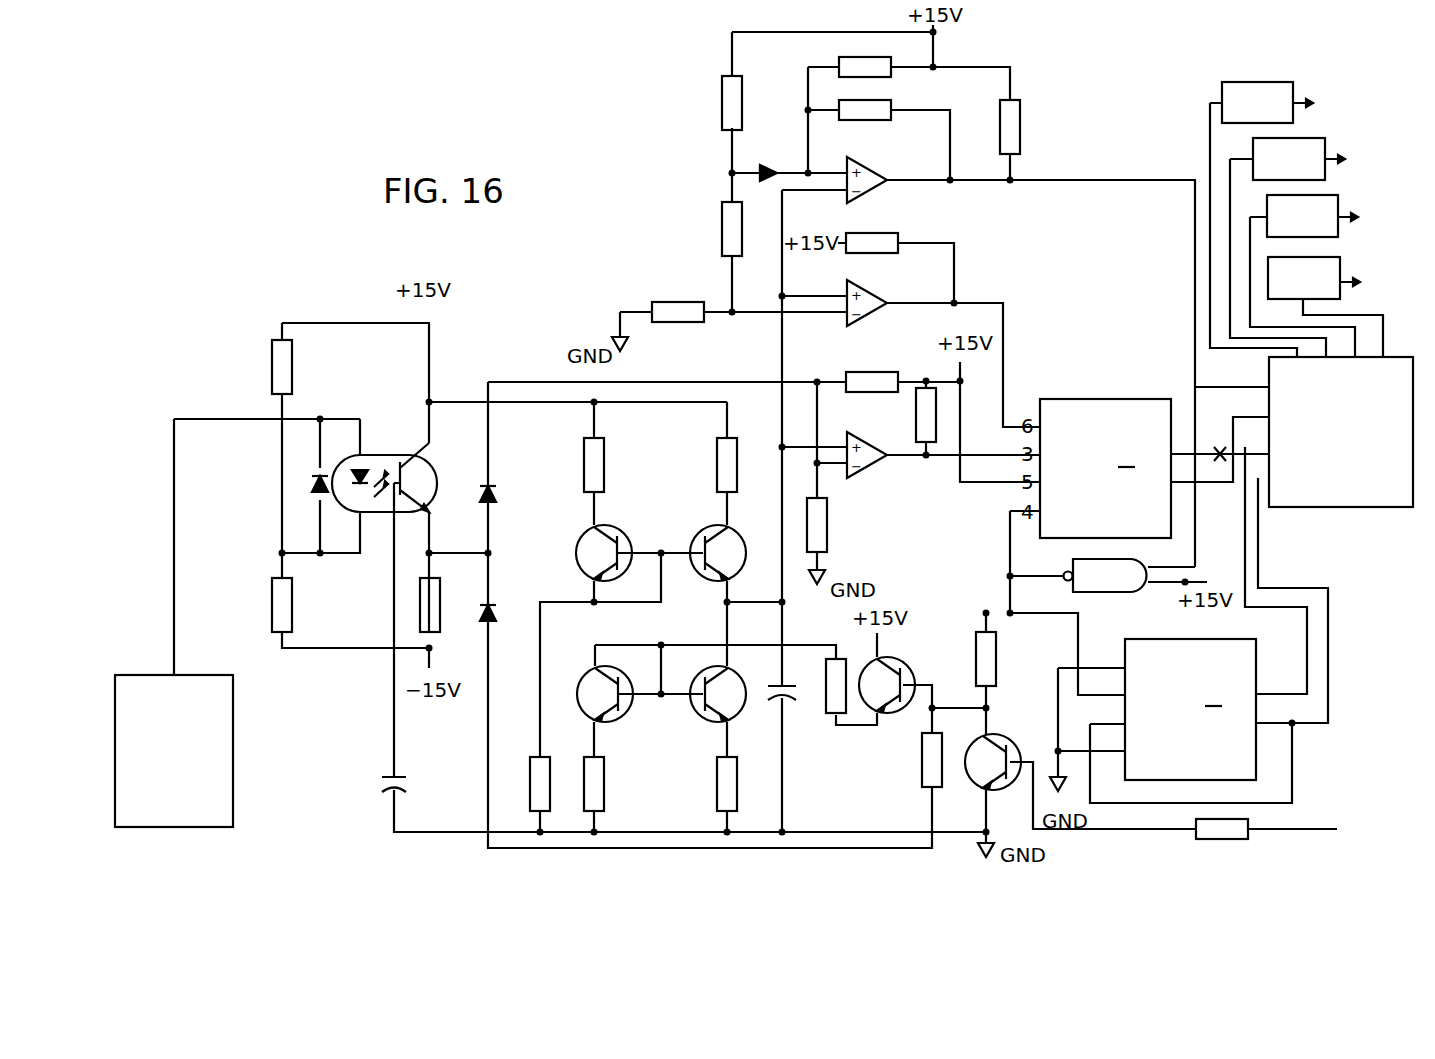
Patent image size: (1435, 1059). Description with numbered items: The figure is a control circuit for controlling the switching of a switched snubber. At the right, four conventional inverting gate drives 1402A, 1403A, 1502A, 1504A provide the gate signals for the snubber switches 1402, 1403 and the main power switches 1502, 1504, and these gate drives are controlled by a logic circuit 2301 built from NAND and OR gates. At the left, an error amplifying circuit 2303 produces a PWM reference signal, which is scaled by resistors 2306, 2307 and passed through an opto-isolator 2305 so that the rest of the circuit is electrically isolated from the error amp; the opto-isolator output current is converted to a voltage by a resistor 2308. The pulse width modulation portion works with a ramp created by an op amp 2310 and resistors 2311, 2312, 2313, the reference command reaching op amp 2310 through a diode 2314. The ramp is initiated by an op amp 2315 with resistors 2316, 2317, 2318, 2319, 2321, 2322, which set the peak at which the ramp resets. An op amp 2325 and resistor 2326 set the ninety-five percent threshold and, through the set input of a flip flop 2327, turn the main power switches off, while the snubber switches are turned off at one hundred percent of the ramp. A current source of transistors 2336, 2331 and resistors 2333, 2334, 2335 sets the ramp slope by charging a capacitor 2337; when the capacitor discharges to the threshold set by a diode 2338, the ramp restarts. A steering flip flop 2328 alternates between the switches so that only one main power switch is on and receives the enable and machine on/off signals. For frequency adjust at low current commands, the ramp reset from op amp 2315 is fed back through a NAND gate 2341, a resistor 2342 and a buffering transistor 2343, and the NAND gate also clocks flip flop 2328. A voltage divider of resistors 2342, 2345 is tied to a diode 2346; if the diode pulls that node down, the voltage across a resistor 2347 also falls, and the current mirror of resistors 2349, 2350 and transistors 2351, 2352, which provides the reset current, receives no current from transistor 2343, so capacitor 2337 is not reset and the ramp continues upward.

The logic circuit 2301 is at (1364, 443).
The error amplifying circuit 2303 is at (198, 765).
The opto-isolator 2305 is at (378, 455).
The resistor 2306 is at (294, 368).
The resistor 2307 is at (292, 608).
The resistor 2308 is at (420, 612).
The op amp 2310 is at (870, 470).
The resistor 2311 is at (828, 530).
The resistor 2312 is at (918, 412).
The resistor 2313 is at (867, 372).
The diode 2314 is at (492, 488).
The op amp 2315 is at (863, 182).
The resistor 2316 is at (682, 303).
The resistor 2317 is at (722, 230).
The resistor 2318 is at (722, 105).
The resistor 2319 is at (862, 58).
The resistor 2321 is at (860, 120).
The resistor 2322 is at (1022, 125).
The op amp 2325 is at (875, 297).
The resistor 2326 is at (880, 235).
The flip flop 2327 is at (1105, 400).
The flip flop 2328 is at (1258, 760).
The transistor 2331 is at (743, 572).
The resistor 2333 is at (530, 783).
The resistor 2334 is at (605, 460).
The resistor 2335 is at (742, 457).
The transistor 2336 is at (622, 535).
The capacitor 2337 is at (797, 690).
The diode 2338 is at (388, 785).
The NAND gate 2341 is at (1105, 575).
The resistor 2342 is at (998, 662).
The buffering transistor 2343 is at (892, 660).
The resistor 2345 is at (921, 757).
The diode 2346 is at (492, 607).
The resistor 2347 is at (827, 670).
The resistor 2349 is at (606, 785).
The resistor 2350 is at (717, 792).
The transistor 2351 is at (585, 680).
The transistor 2352 is at (697, 678).
The gate drive 1402A is at (1257, 102).
The gate drive 1403A is at (1289, 159).
The gate drive 1502A is at (1302, 216).
The gate drive 1504A is at (1304, 278).
The snubber switch 1402 is at (1338, 102).
The snubber switch 1403 is at (1373, 158).
The main power switch 1502 is at (1386, 216).
The main power switch 1504 is at (1391, 281).